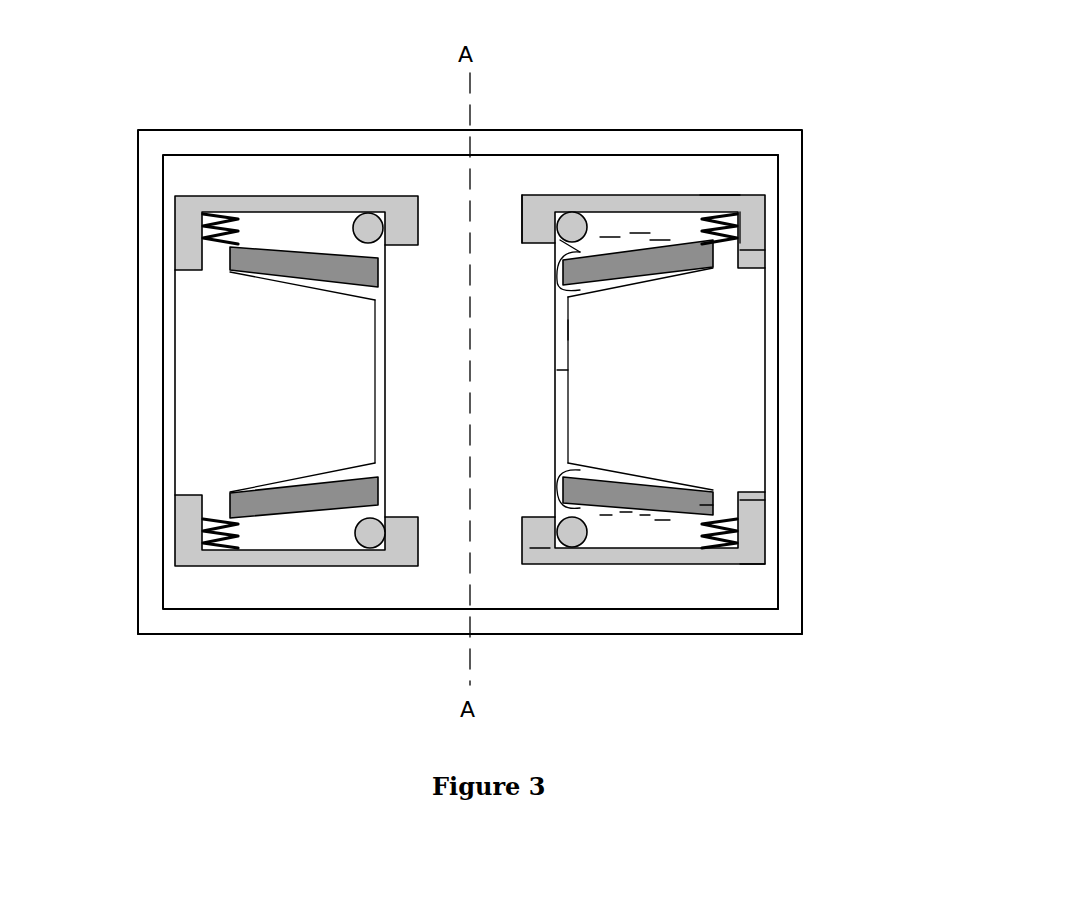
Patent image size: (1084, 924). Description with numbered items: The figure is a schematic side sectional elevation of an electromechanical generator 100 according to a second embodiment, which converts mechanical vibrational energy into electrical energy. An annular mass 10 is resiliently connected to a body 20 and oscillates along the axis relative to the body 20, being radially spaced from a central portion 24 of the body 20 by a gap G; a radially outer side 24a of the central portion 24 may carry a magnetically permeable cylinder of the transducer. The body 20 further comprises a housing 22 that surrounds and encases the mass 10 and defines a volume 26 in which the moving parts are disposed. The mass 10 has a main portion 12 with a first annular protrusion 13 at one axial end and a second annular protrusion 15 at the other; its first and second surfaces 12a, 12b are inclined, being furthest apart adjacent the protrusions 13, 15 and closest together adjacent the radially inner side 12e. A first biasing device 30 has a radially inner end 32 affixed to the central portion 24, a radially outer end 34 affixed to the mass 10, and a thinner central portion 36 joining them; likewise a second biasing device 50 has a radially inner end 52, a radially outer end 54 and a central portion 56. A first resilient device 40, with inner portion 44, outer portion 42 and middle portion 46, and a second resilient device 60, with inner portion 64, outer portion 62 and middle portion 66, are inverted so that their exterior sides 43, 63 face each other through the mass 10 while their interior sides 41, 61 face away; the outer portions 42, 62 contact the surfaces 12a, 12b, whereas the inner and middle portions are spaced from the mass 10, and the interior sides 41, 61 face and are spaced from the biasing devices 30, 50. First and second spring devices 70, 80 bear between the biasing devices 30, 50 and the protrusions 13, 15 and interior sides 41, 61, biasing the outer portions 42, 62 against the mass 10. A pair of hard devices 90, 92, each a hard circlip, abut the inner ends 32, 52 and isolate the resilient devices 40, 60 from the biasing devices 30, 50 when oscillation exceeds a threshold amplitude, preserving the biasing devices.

The electromechanical generator 100 is at (134, 72).
The mass 10 is at (747, 412).
The main portion 12 is at (703, 432).
The first surface 12a is at (342, 252).
The second surface 12b is at (323, 492).
The radially inner side 12e is at (572, 351).
The first annular protrusion 13 is at (726, 258).
The second annular protrusion 15 is at (735, 495).
The body 20 is at (493, 138).
The housing 22 is at (757, 620).
The central portion 24 is at (445, 550).
The radially outer side 24a is at (570, 333).
The volume 26 is at (765, 588).
The first biasing device 30 is at (577, 202).
The radially inner end 32 is at (528, 203).
The radially outer end 34 is at (760, 258).
The central portion 36 is at (610, 237).
The first resilient device 40 is at (728, 161).
The interior side 41 is at (660, 241).
The outer portion 42 is at (747, 222).
The exterior side 43 is at (577, 253).
The inner portion 44 is at (640, 233).
The middle portion 46 is at (707, 213).
The second biasing device 50 is at (607, 557).
The radially inner end 52 is at (540, 548).
The radially outer end 54 is at (753, 505).
The central portion 56 is at (625, 512).
The second resilient device 60 is at (700, 538).
The interior side 61 is at (767, 558).
The outer portion 62 is at (713, 510).
The exterior side 63 is at (645, 517).
The inner portion 64 is at (605, 516).
The middle portion 66 is at (660, 520).
The first spring device 70 is at (200, 232).
The second spring device 80 is at (200, 538).
The hard device 90 is at (373, 223).
The hard device 92 is at (375, 533).
The gap G is at (563, 377).